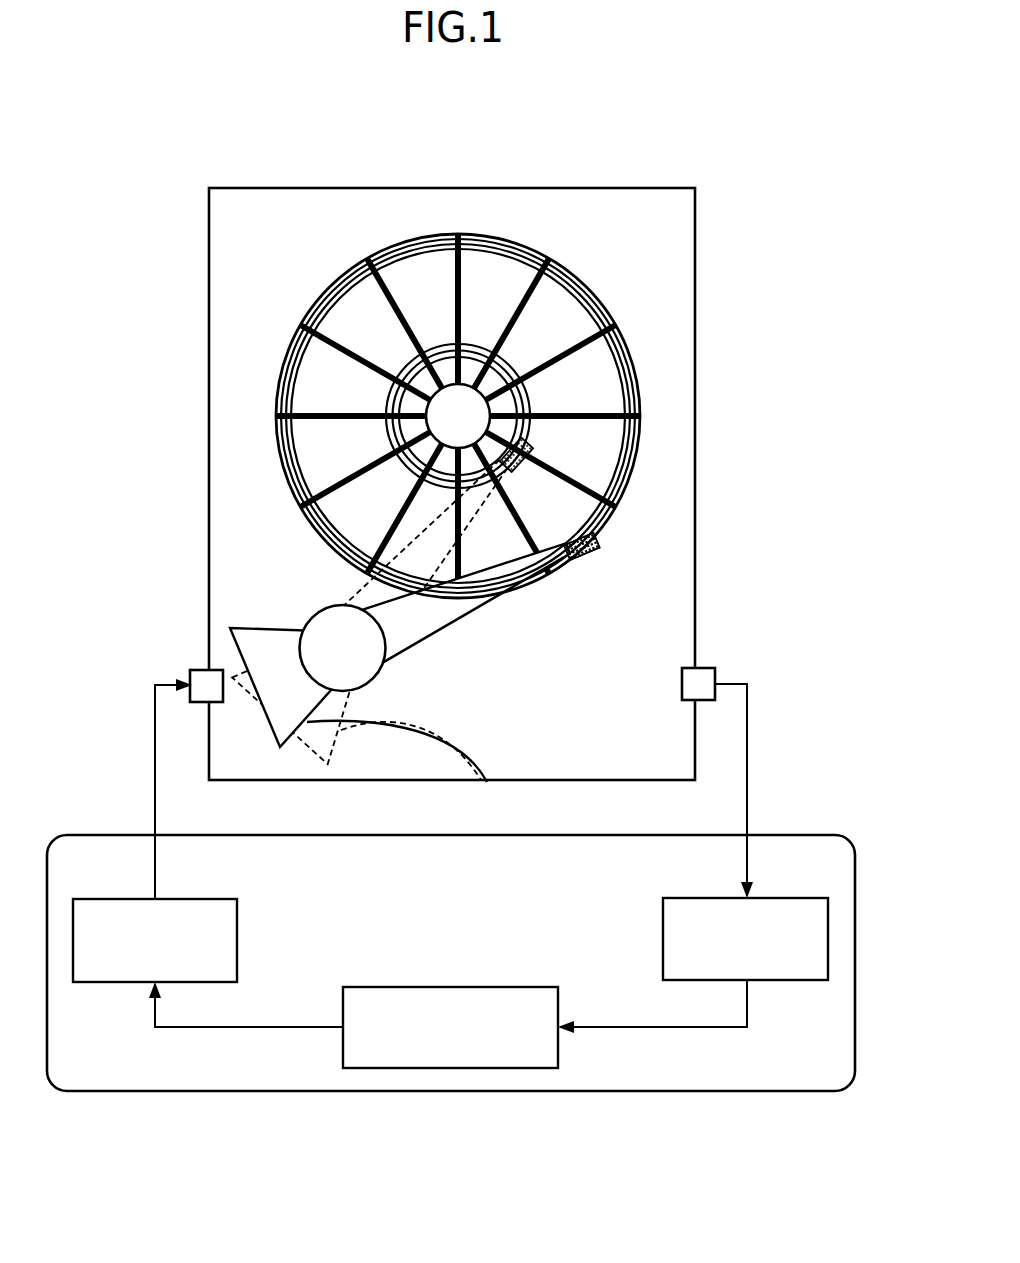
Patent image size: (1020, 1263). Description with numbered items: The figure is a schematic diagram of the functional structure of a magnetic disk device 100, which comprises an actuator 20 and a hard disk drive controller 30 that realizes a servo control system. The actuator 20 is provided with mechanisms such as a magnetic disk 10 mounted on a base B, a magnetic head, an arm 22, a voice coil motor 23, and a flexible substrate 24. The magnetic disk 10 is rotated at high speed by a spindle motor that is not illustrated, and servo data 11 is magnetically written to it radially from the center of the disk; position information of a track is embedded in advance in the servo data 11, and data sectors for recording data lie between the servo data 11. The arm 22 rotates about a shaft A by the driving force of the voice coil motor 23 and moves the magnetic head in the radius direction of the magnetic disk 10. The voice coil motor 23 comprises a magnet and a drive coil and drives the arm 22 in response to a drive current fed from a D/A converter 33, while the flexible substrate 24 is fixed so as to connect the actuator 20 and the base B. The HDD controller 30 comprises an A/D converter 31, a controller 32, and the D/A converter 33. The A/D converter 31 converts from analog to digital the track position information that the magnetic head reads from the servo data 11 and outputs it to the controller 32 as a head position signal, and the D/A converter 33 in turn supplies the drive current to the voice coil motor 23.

The magnetic disk device 100 is at (732, 132).
The magnetic disk 10 is at (523, 245).
The servo data 11 is at (577, 346).
The base B is at (696, 505).
The actuator 20 is at (286, 566).
The arm 22 is at (462, 612).
The voice coil motor 23 is at (268, 630).
The flexible substrate 24 is at (483, 765).
The shaft A is at (367, 669).
The HDD controller 30 is at (788, 835).
The A/D converter 31 is at (786, 898).
The controller 32 is at (560, 997).
The D/A converter 33 is at (208, 885).